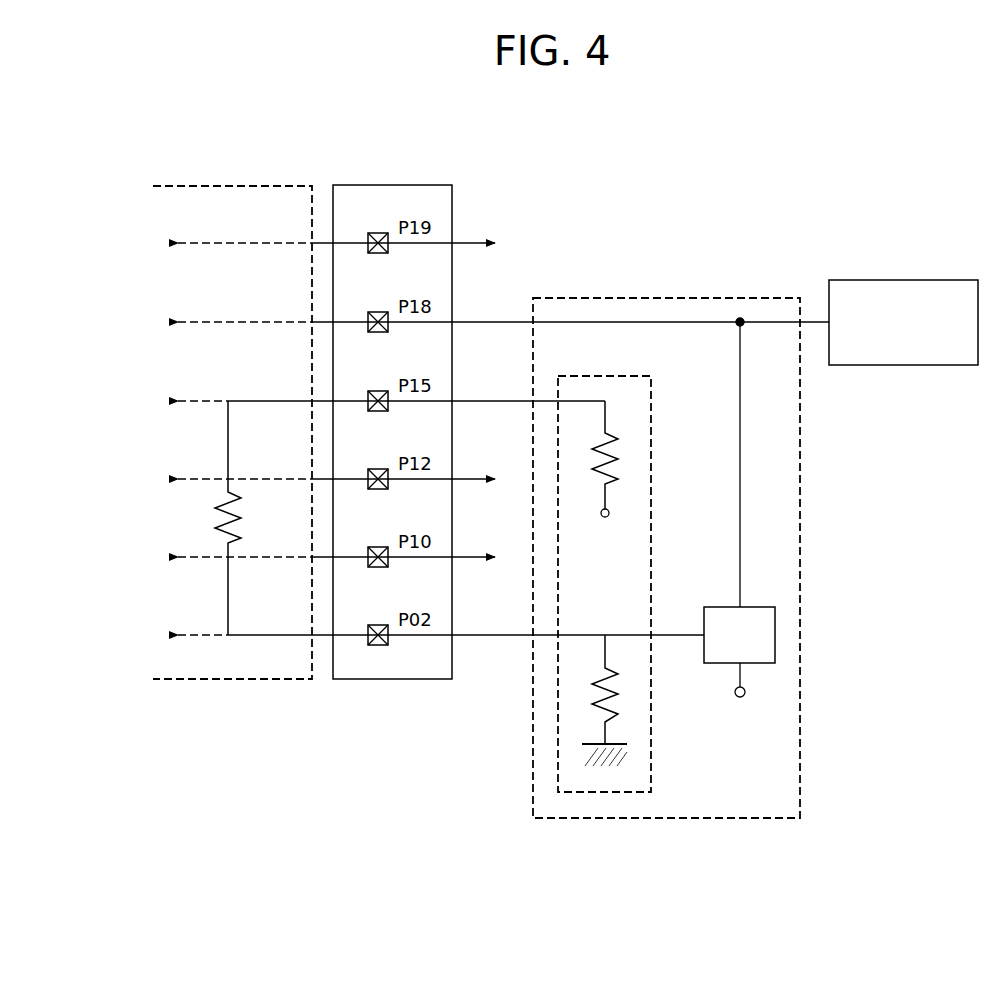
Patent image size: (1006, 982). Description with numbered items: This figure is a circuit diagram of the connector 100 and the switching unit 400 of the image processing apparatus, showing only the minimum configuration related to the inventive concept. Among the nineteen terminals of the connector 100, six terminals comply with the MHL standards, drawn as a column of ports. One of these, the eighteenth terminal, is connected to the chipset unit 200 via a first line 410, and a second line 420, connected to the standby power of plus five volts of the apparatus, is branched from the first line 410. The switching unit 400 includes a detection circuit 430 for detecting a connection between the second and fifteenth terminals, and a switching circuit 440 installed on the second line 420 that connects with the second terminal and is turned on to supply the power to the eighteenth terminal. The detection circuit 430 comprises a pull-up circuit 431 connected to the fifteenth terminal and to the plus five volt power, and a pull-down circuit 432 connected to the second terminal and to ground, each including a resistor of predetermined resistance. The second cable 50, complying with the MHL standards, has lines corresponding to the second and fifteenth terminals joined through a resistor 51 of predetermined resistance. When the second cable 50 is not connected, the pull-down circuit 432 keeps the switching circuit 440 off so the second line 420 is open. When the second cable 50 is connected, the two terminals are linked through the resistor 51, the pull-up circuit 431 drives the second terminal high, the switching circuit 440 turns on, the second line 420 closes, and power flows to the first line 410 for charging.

The second cable 50 is at (231, 186).
The resistor 51 is at (203, 521).
The connector 100 is at (455, 172).
The chipset unit 200 is at (904, 280).
The switching unit 400 is at (645, 298).
The first line 410 is at (711, 322).
The second line 420 is at (740, 542).
The detection circuit 430 is at (558, 765).
The pull-up circuit 431 is at (627, 452).
The pull-down circuit 432 is at (624, 704).
The switching circuit 440 is at (775, 632).